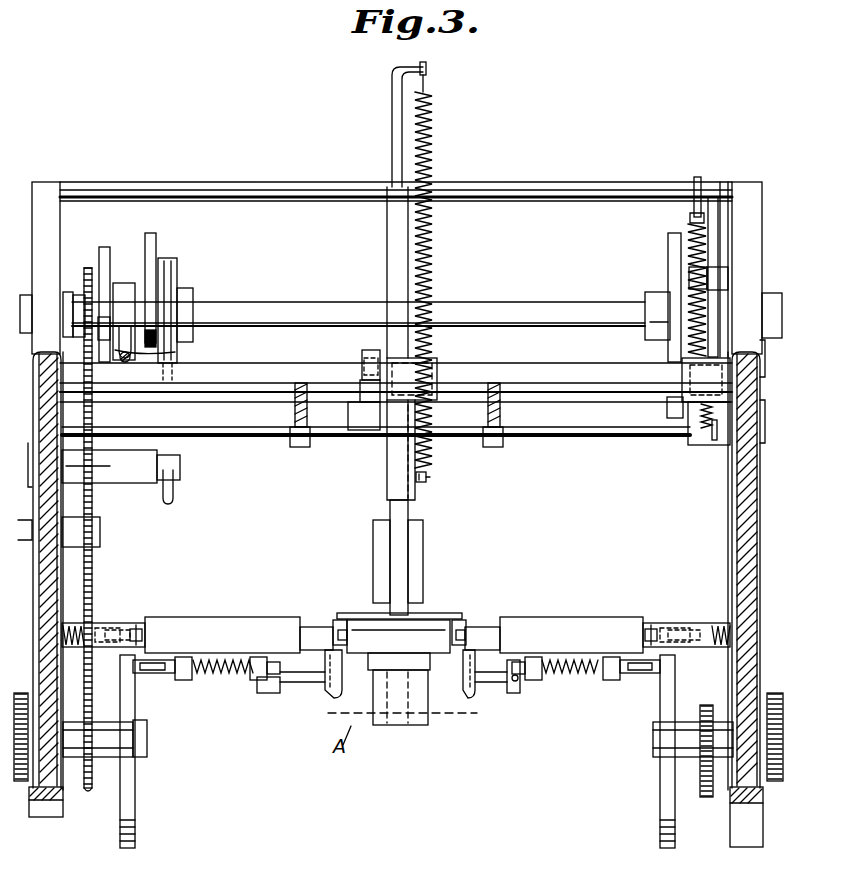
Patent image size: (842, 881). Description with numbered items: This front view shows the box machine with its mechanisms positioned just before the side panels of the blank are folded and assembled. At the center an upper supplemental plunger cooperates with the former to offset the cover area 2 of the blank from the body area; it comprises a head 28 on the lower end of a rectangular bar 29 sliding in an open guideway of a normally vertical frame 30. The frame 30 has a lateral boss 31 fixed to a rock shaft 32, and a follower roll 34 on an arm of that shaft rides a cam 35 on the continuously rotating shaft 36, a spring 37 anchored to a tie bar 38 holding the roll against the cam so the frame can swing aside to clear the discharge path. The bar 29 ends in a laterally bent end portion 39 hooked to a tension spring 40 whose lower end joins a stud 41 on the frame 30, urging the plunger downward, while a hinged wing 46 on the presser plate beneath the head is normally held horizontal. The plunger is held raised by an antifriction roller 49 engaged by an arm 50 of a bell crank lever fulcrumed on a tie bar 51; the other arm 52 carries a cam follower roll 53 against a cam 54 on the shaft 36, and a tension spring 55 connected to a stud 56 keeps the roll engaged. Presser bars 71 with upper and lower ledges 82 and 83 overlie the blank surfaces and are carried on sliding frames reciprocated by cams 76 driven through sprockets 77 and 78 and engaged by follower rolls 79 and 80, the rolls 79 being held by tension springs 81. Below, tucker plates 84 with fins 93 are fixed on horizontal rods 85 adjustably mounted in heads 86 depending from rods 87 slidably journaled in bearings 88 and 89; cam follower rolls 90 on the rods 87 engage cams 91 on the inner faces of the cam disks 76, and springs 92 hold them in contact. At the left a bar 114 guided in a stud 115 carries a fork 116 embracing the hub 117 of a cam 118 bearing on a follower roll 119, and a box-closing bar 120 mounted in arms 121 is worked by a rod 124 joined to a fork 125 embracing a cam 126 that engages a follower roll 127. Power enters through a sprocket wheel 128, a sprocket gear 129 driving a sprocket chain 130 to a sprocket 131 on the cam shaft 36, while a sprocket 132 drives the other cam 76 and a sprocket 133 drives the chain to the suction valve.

The cover area 2 is at (181, 469).
The plunger head 28 is at (420, 560).
The rectangular bar 29 is at (410, 517).
The vertical frame 30 is at (387, 466).
The lateral boss 31 is at (430, 372).
The rock shaft 32 is at (481, 368).
The follower roll 34 is at (667, 408).
The cam 35 is at (668, 276).
The continuously rotating shaft 36 is at (271, 302).
The spring 37 is at (690, 242).
The tie bar 38 is at (578, 192).
The laterally bent end portion 39 is at (427, 68).
The tension spring 40 is at (432, 262).
The stud 41 is at (430, 478).
The wing 46 is at (415, 612).
The antifriction roller 49 is at (363, 356).
The bell crank lever arm 50 is at (345, 368).
The tie bar 51 is at (605, 440).
The bell crank lever arm 52 is at (690, 270).
The cam follower roll 53 is at (722, 272).
The cam 54 is at (714, 212).
The tension spring 55 is at (708, 440).
The stud 56 is at (720, 446).
The presser bars 71 is at (318, 620).
The cams 76 is at (135, 806).
The sprocket 77 is at (700, 766).
The sprocket 78 is at (95, 774).
The follower rolls 79 is at (147, 633).
The follower rolls 80 is at (112, 632).
The tension springs 81 is at (78, 630).
The upper ledge 82 is at (340, 625).
The lower ledge 83 is at (342, 641).
The tucker plates 84 is at (330, 706).
The horizontal rods 85 is at (277, 698).
The heads 86 is at (268, 692).
The rods 87 is at (248, 674).
The bearings 88 is at (261, 665).
The bearings 89 is at (192, 668).
The cam follower rolls 90 is at (137, 681).
The cams 91 is at (137, 700).
The springs 92 is at (212, 676).
The fins 93 is at (340, 692).
The bar 114 is at (173, 494).
The stud 115 is at (135, 484).
The fork 116 is at (168, 258).
The hub 117 is at (185, 290).
The cam 118 is at (162, 228).
The follower roll 119 is at (157, 340).
The box-closing bar 120 is at (460, 440).
The arms 121 is at (297, 420).
The rod 124 is at (130, 353).
The fork 125 is at (125, 283).
The cam 126 is at (105, 248).
The follower roll 127 is at (100, 333).
The sprocket wheel 128 is at (22, 782).
The sprocket gear 129 is at (86, 790).
The sprocket chain 130 is at (93, 565).
The sprocket 131 is at (88, 268).
The sprocket 132 is at (775, 782).
The sprocket 133 is at (700, 798).